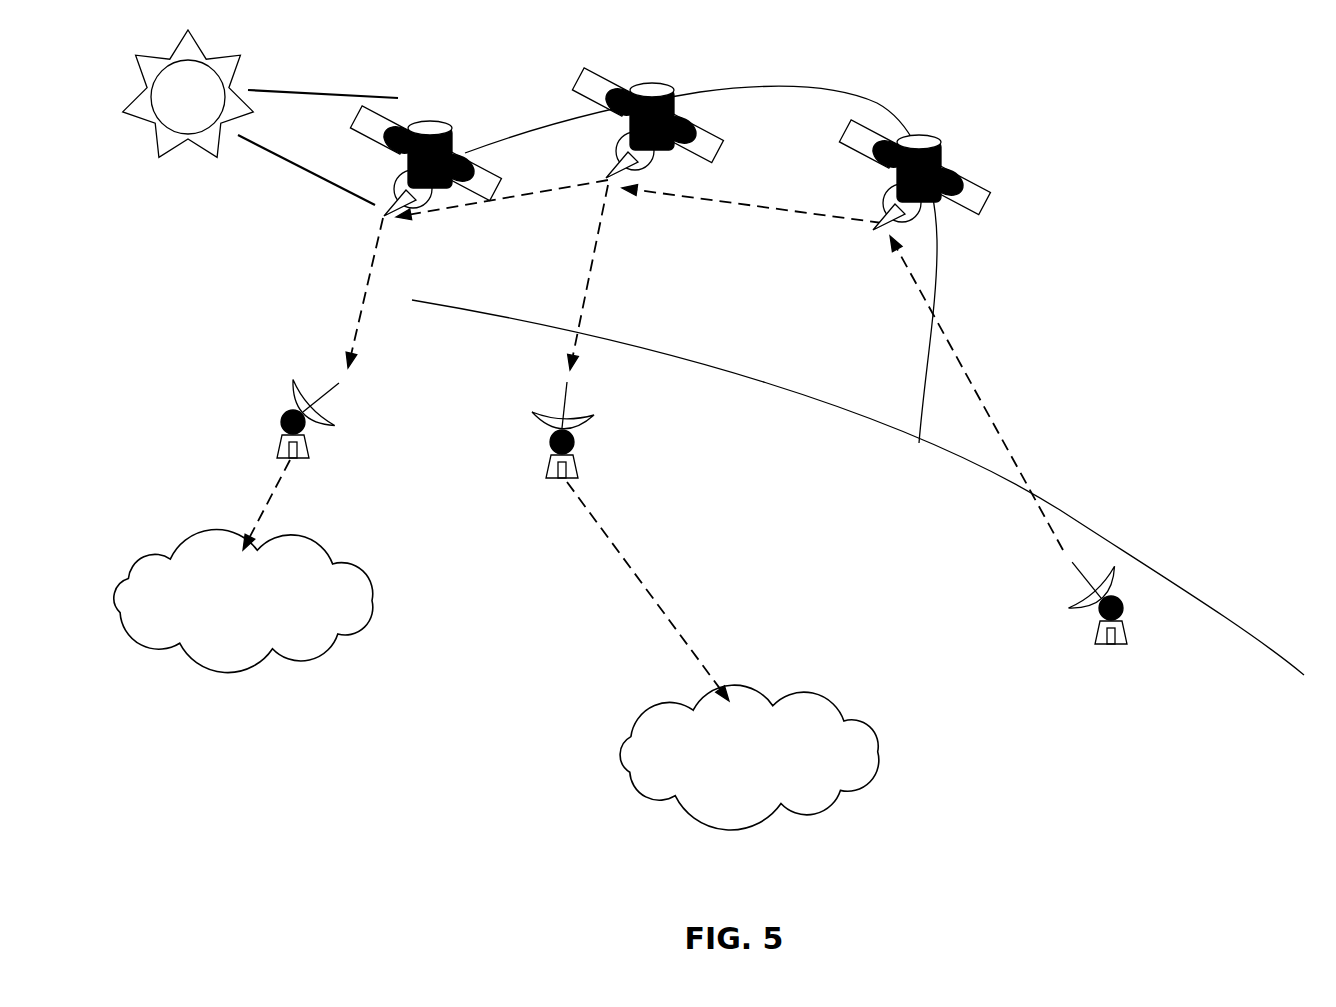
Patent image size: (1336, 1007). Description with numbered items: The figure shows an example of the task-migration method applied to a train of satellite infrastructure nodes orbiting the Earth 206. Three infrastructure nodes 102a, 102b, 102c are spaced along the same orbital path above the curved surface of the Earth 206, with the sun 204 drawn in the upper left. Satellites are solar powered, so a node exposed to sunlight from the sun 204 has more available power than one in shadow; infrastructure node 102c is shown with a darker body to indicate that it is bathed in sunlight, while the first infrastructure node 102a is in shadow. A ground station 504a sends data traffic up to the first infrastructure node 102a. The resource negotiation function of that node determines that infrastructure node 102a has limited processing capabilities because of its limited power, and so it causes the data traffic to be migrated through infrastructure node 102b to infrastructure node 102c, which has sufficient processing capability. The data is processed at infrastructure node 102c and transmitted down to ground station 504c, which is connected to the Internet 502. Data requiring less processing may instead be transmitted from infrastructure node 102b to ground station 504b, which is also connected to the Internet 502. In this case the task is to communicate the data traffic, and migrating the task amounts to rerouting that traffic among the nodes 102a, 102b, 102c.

The first infrastructure node 102a is at (942, 146).
The infrastructure node 102b is at (647, 120).
The infrastructure node 102c is at (425, 154).
The sun 204 is at (198, 152).
The Earth 206 is at (1180, 585).
The Internet 502 is at (496, 680).
The ground station 504a is at (1095, 614).
The ground station 504b is at (547, 447).
The ground station 504c is at (281, 409).